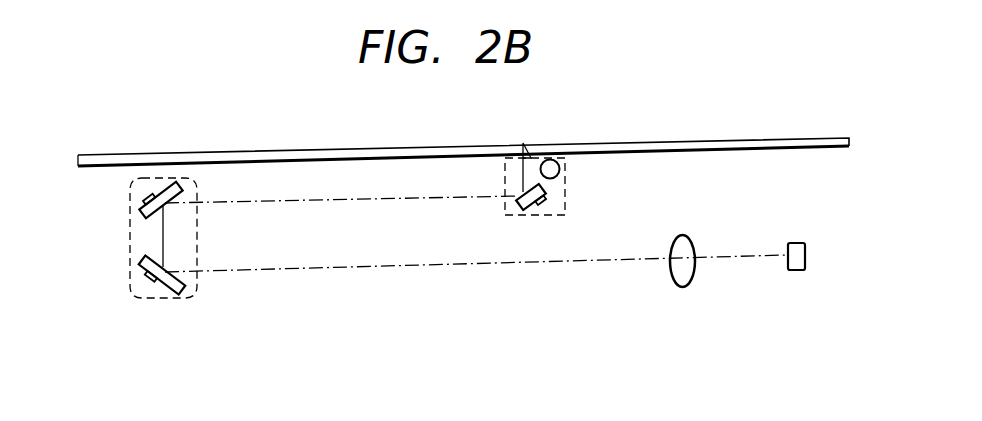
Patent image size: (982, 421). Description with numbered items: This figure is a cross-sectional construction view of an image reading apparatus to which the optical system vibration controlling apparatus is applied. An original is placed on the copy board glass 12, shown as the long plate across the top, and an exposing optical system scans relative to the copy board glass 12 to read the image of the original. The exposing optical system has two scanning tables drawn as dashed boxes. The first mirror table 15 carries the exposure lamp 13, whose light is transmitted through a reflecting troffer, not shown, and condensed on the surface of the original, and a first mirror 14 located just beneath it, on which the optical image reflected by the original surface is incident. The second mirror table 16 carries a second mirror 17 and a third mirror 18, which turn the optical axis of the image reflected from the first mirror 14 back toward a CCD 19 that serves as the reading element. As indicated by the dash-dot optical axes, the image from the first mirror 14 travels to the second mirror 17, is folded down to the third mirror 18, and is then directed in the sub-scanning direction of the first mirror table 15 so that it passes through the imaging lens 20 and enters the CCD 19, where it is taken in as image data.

The copy board glass 12 is at (677, 145).
The exposure lamp 13 is at (559, 162).
The first mirror 14 is at (538, 207).
The first mirror table 15 is at (560, 190).
The second mirror table 16 is at (200, 233).
The second mirror 17 is at (180, 186).
The third mirror 18 is at (158, 299).
The CCD 19 is at (797, 270).
The imaging lens 20 is at (678, 276).